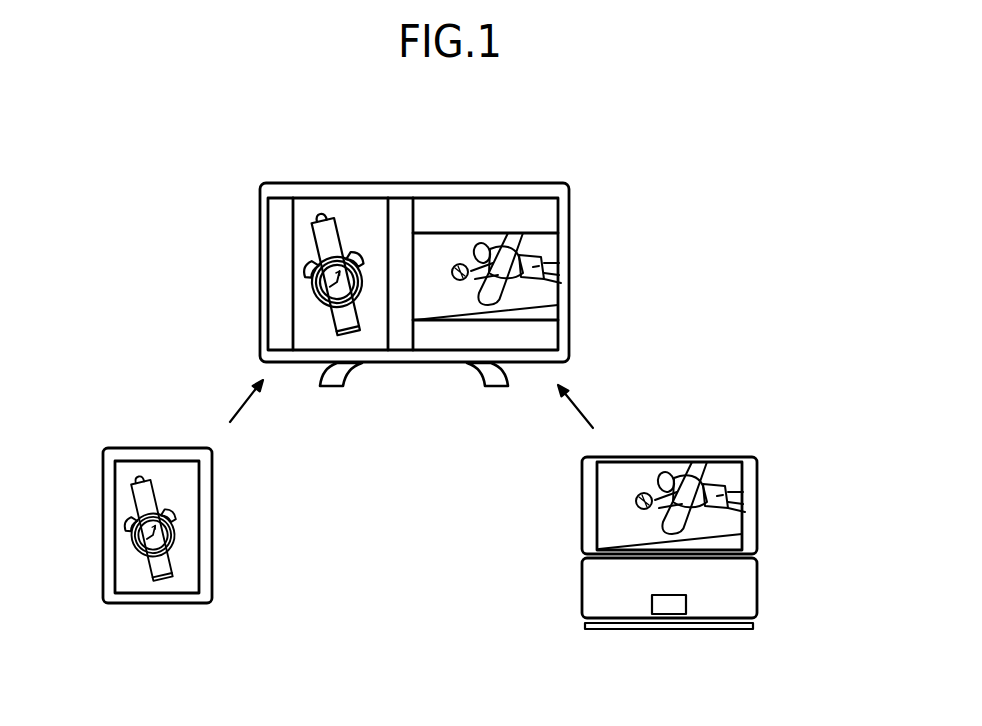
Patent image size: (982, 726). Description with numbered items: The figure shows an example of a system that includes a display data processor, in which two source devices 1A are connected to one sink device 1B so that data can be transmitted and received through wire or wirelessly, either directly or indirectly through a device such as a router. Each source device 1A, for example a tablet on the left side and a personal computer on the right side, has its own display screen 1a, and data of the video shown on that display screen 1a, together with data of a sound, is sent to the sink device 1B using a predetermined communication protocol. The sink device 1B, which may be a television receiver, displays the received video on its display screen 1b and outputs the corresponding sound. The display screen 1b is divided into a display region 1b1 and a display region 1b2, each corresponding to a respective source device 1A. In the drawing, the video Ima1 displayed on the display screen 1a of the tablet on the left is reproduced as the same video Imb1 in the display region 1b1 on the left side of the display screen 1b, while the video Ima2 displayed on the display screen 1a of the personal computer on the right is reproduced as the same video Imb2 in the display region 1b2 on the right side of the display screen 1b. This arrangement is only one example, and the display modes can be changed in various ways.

The source device 1A is at (105, 446).
The sink device 1B is at (567, 180).
The display screen 1a is at (482, 564).
The display screen 1b is at (487, 196).
The display region 1b1 is at (344, 231).
The display region 1b2 is at (555, 280).
The video Ima1 is at (133, 580).
The video Ima2 is at (736, 541).
The video Imb1 is at (357, 208).
The video Imb2 is at (550, 312).